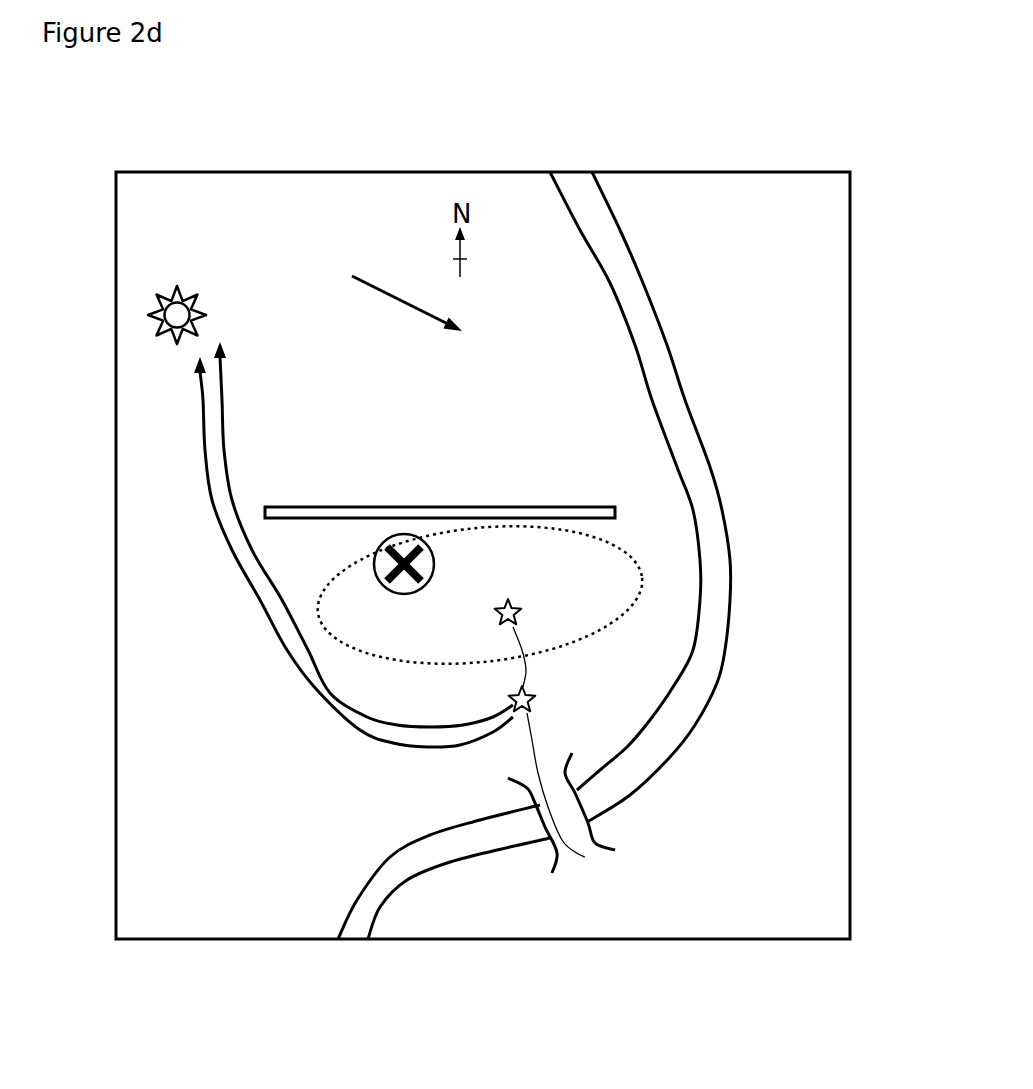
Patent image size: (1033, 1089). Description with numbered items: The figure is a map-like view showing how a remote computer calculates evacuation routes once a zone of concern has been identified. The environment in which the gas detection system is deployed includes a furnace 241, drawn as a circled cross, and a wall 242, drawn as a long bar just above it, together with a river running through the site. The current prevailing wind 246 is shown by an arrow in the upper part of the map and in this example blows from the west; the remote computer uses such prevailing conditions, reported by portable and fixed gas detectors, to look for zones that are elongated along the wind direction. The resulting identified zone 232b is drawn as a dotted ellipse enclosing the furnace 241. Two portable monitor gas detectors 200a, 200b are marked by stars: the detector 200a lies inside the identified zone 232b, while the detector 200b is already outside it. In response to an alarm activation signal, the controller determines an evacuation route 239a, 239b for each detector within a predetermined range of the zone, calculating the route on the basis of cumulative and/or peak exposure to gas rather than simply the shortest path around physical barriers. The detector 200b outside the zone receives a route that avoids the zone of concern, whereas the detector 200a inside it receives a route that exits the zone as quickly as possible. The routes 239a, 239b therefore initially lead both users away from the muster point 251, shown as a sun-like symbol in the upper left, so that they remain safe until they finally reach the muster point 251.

The prevailing wind 246 is at (405, 298).
The muster point 251 is at (148, 316).
The wall 242 is at (265, 512).
The identified zone 232b is at (643, 572).
The furnace 241 is at (385, 588).
The portable monitor gas detector 200a is at (530, 608).
The portable monitor gas detector 200b is at (585, 857).
The evacuation route 239a is at (383, 727).
The evacuation route 239b is at (443, 747).